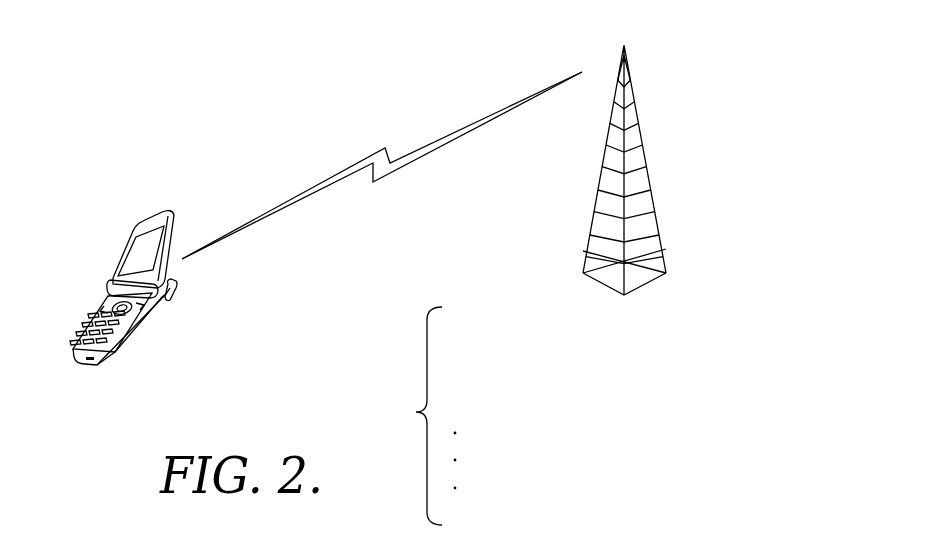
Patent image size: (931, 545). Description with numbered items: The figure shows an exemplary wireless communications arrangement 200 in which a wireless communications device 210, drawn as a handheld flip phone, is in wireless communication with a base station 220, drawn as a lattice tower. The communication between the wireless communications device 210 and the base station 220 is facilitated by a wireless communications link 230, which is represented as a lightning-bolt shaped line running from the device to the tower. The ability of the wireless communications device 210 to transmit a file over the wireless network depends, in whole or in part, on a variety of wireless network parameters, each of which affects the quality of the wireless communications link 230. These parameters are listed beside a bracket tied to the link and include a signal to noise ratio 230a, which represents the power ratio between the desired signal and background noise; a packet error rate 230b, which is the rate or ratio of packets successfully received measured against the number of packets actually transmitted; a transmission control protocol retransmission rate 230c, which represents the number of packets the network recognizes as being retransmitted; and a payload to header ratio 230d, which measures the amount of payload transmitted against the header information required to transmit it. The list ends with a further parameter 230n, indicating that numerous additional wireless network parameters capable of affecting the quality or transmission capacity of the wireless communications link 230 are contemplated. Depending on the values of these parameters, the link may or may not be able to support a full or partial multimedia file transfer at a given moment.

The wireless communication system 200 is at (82, 68).
The wireless communications device 210 is at (134, 231).
The base station 220 is at (648, 163).
The wireless communications link 230 is at (427, 412).
The signal to noise ratio 230a is at (623, 323).
The packet error rate 230b is at (608, 349).
The transmission control protocol retransmission rate 230c is at (645, 375).
The payload to header ratio 230d is at (647, 402).
The nth link quality metric 230n is at (476, 508).